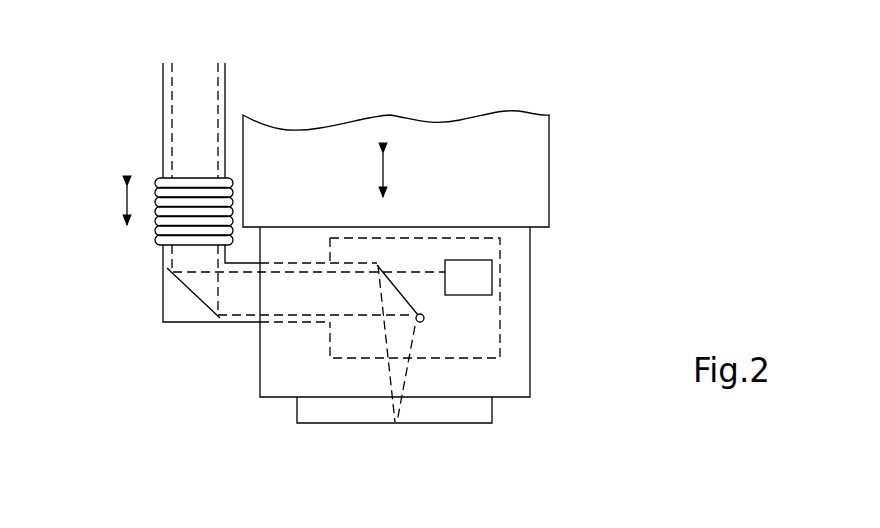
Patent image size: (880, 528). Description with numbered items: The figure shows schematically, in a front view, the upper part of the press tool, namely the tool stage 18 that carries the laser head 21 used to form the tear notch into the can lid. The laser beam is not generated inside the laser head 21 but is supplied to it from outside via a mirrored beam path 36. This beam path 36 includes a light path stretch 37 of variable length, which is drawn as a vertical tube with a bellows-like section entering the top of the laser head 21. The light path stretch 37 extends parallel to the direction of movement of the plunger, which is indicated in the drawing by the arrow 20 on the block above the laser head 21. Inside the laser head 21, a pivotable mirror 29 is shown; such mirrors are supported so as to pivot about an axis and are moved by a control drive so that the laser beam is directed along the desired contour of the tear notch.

The tool stage 18 is at (213, 397).
The arrow 20 is at (383, 173).
The laser head 21 is at (285, 375).
The mirror 29 is at (405, 303).
The mirrored beam path 36 is at (128, 262).
The light path stretch 37 is at (181, 127).